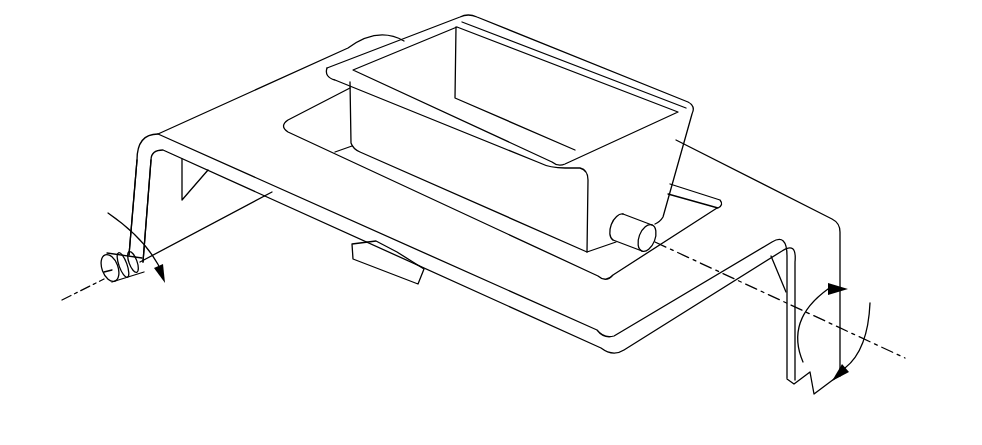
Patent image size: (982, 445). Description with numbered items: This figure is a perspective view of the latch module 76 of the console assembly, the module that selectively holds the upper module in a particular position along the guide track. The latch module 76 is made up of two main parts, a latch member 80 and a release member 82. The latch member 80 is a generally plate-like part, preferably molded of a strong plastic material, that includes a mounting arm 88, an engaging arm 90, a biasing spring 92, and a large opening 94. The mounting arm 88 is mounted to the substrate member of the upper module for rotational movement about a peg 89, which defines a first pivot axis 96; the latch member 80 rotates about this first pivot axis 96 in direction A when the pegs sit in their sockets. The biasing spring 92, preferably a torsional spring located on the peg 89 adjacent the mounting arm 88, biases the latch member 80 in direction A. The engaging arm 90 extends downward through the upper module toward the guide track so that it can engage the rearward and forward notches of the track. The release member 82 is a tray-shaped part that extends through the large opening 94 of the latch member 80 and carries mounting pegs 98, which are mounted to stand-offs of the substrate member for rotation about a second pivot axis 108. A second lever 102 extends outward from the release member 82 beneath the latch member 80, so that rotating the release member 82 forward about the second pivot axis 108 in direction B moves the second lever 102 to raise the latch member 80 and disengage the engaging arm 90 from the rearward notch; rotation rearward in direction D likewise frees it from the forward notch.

The latch module 76 is at (729, 78).
The latch member 80 is at (627, 310).
The release member 82 is at (552, 88).
The mounting arm 88 is at (217, 210).
The peg 89 is at (108, 268).
The engaging arm 90 is at (800, 374).
The biasing spring 92 is at (120, 298).
The large opening 94 is at (593, 272).
The first pivot axis 96 is at (88, 290).
The mounting pegs 98 is at (657, 227).
The second lever 102 is at (378, 260).
The second pivot axis 108 is at (742, 292).